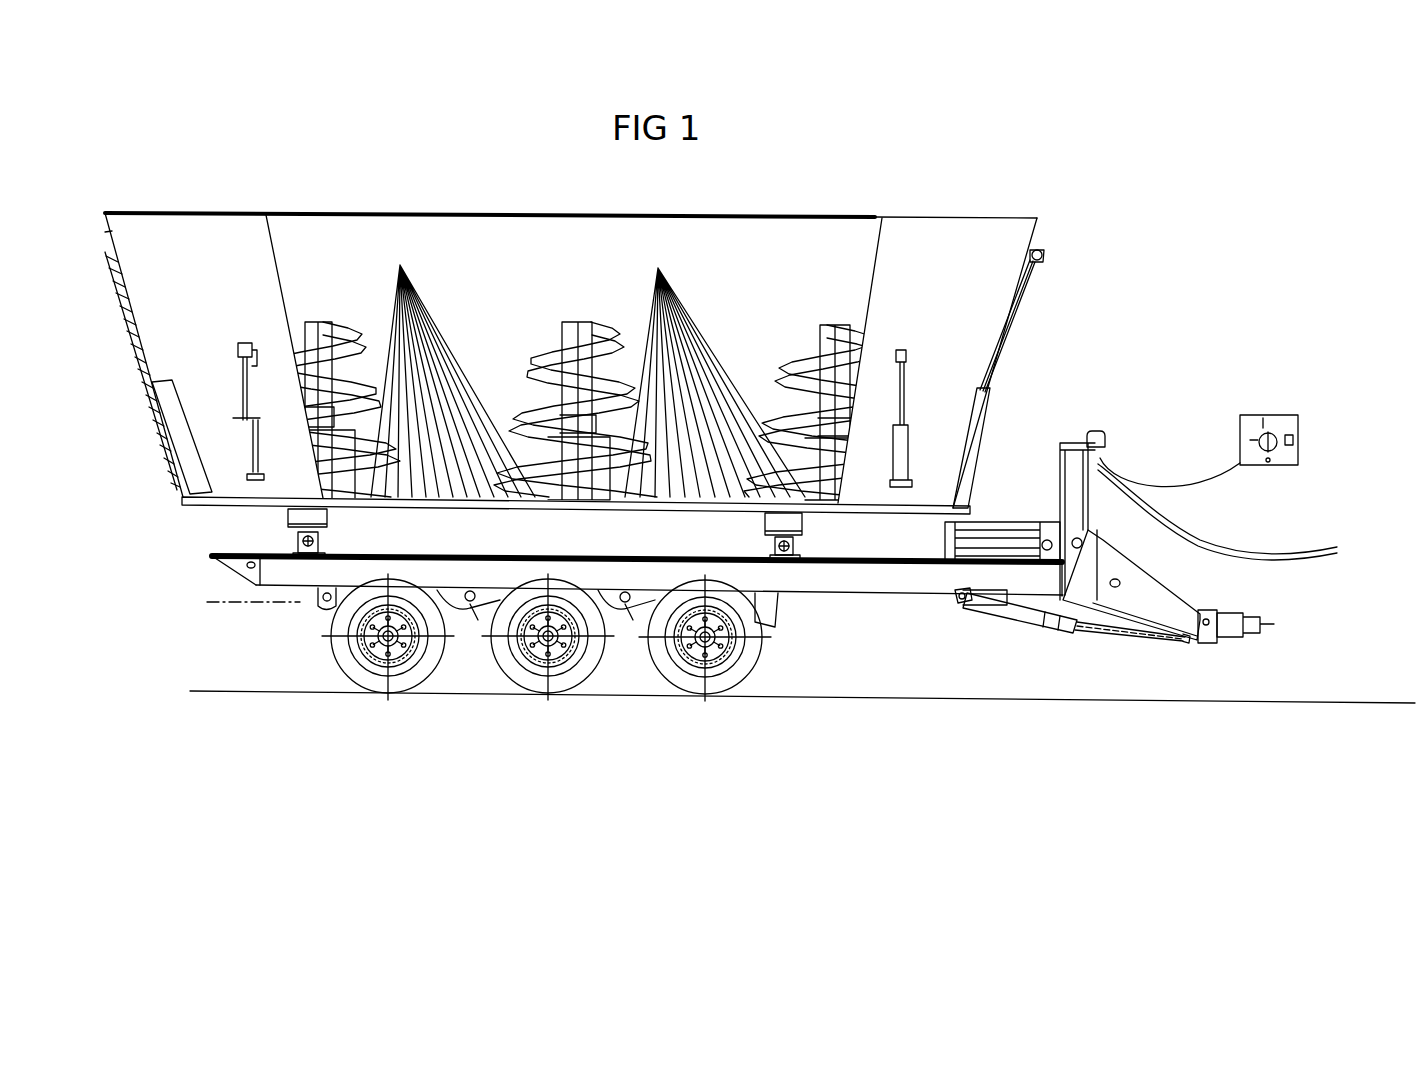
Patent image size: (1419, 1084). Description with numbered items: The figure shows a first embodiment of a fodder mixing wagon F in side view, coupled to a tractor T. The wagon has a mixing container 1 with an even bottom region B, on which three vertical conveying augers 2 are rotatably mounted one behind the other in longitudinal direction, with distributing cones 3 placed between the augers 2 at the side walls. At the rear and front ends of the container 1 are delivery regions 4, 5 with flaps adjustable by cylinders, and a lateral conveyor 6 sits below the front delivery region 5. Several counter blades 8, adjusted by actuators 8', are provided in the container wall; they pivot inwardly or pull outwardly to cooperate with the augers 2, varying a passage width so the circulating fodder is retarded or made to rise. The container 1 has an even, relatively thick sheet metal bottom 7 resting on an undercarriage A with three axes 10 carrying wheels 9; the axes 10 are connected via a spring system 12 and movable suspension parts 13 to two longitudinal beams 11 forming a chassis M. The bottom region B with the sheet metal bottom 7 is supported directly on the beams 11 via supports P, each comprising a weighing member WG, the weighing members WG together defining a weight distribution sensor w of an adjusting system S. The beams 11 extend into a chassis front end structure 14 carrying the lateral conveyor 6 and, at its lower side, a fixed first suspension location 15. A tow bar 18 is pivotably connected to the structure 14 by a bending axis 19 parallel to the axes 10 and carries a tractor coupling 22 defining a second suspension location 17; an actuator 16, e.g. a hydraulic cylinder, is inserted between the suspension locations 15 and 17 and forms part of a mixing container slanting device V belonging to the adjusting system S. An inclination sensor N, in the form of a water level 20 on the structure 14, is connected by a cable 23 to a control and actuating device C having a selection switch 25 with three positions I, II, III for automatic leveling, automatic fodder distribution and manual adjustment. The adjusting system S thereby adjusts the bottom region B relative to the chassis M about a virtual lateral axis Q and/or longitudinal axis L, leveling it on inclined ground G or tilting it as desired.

The mixing container 1 is at (960, 243).
The vertical conveying augers 2 is at (305, 330).
The distributing cones 3 is at (425, 330).
The delivery region 4 is at (180, 438).
The delivery region 5 is at (980, 420).
The lateral conveyor 6 is at (998, 540).
The sheet metal bottom 7 is at (223, 505).
The counter blades 8 is at (552, 418).
The actuators 8' is at (263, 381).
The wheels 9 is at (375, 682).
The axes 10 is at (378, 645).
The longitudinal beams 11 is at (513, 567).
The spring system 12 is at (472, 610).
The movable suspension parts 13 is at (476, 583).
The chassis front end structure 14 is at (1003, 580).
The first suspension location 15 is at (958, 608).
The actuator 16 is at (1050, 630).
The second suspension location 17 is at (1180, 640).
The tow bar 18 is at (1150, 597).
The bending axis 19 is at (1082, 543).
The water level 20 is at (1105, 445).
The tractor coupling 22 is at (1270, 630).
The cable 23 is at (1210, 480).
The selection switch 25 is at (1283, 450).
The fodder mixing wagon F is at (862, 182).
The adjusting system S is at (1090, 372).
The inclination sensor N is at (1102, 425).
The chassis M is at (224, 580).
The longitudinal axis L is at (232, 607).
The lateral axis Q is at (322, 650).
The undercarriage A is at (368, 648).
The bottom region B is at (276, 489).
The supports P is at (330, 517).
The weight distribution sensor w is at (382, 540).
The weighing members WG is at (290, 557).
The mixing container slanting device V is at (1093, 650).
The ground G is at (828, 699).
The tractor T is at (1371, 648).
The control and actuating device C is at (1243, 415).
The position I is at (1250, 435).
The position II is at (1253, 413).
The position III is at (1295, 425).